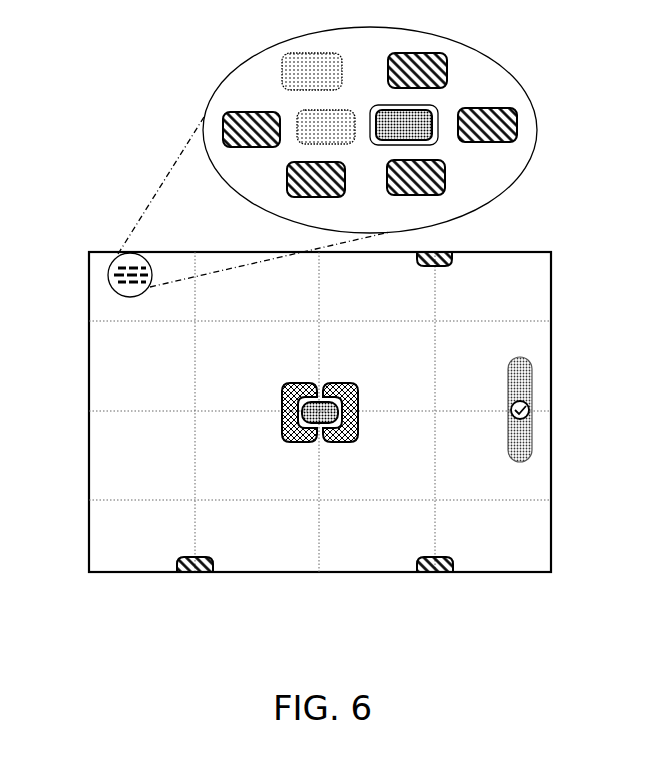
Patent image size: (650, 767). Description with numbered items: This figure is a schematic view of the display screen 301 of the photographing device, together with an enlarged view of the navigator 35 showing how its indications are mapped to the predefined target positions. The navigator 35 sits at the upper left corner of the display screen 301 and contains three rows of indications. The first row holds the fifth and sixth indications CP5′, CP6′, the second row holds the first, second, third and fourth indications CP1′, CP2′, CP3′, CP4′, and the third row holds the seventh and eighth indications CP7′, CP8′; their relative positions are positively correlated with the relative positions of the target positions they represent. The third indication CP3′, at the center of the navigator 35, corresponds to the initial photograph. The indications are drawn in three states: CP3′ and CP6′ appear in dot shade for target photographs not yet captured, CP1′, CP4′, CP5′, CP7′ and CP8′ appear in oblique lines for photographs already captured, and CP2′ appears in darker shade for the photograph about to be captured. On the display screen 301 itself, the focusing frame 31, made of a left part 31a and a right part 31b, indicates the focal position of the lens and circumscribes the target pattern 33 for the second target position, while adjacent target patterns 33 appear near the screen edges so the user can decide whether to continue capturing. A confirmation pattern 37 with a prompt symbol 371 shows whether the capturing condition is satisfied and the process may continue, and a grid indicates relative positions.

The first indication CP1′ is at (491, 110).
The second indication CP2′ is at (420, 108).
The third indication CP3′ is at (322, 124).
The fourth indication CP4′ is at (252, 148).
The fifth indication CP5′ is at (424, 66).
The sixth indication CP6′ is at (298, 66).
The seventh indication CP7′ is at (430, 178).
The eighth indication CP8′ is at (312, 186).
The display screen 301 is at (499, 572).
The navigator 35 is at (118, 286).
The target pattern 33 is at (320, 400).
The focusing frame 31 is at (287, 437).
The left part 31a is at (283, 428).
The right part 31b is at (340, 441).
The confirmation pattern 37 is at (554, 426).
The prompt symbol 371 is at (531, 415).